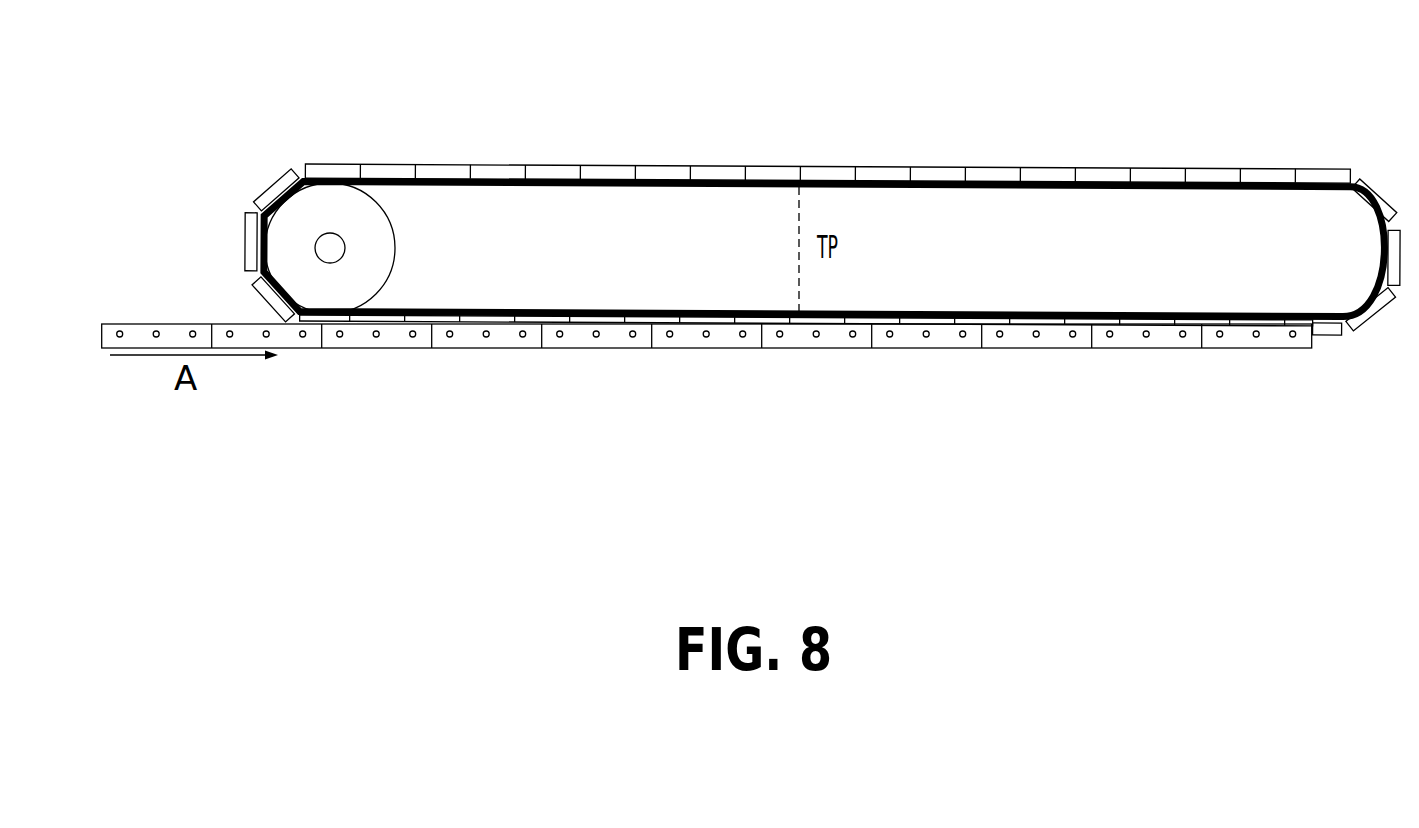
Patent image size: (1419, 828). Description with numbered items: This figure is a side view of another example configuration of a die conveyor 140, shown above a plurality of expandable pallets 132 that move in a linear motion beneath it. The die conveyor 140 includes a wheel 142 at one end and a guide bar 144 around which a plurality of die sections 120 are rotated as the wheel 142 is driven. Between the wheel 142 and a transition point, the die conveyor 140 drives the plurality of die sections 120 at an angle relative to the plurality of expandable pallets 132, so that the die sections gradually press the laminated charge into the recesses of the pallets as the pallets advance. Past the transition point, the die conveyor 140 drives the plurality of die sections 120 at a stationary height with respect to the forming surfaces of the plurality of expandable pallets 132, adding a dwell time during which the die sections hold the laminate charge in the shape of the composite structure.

The plurality of die sections 120 is at (233, 240).
The plurality of expandable pallets 132 is at (163, 303).
The die conveyor 140 is at (252, 157).
The wheel 142 is at (410, 236).
The guide bar 144 is at (1346, 177).